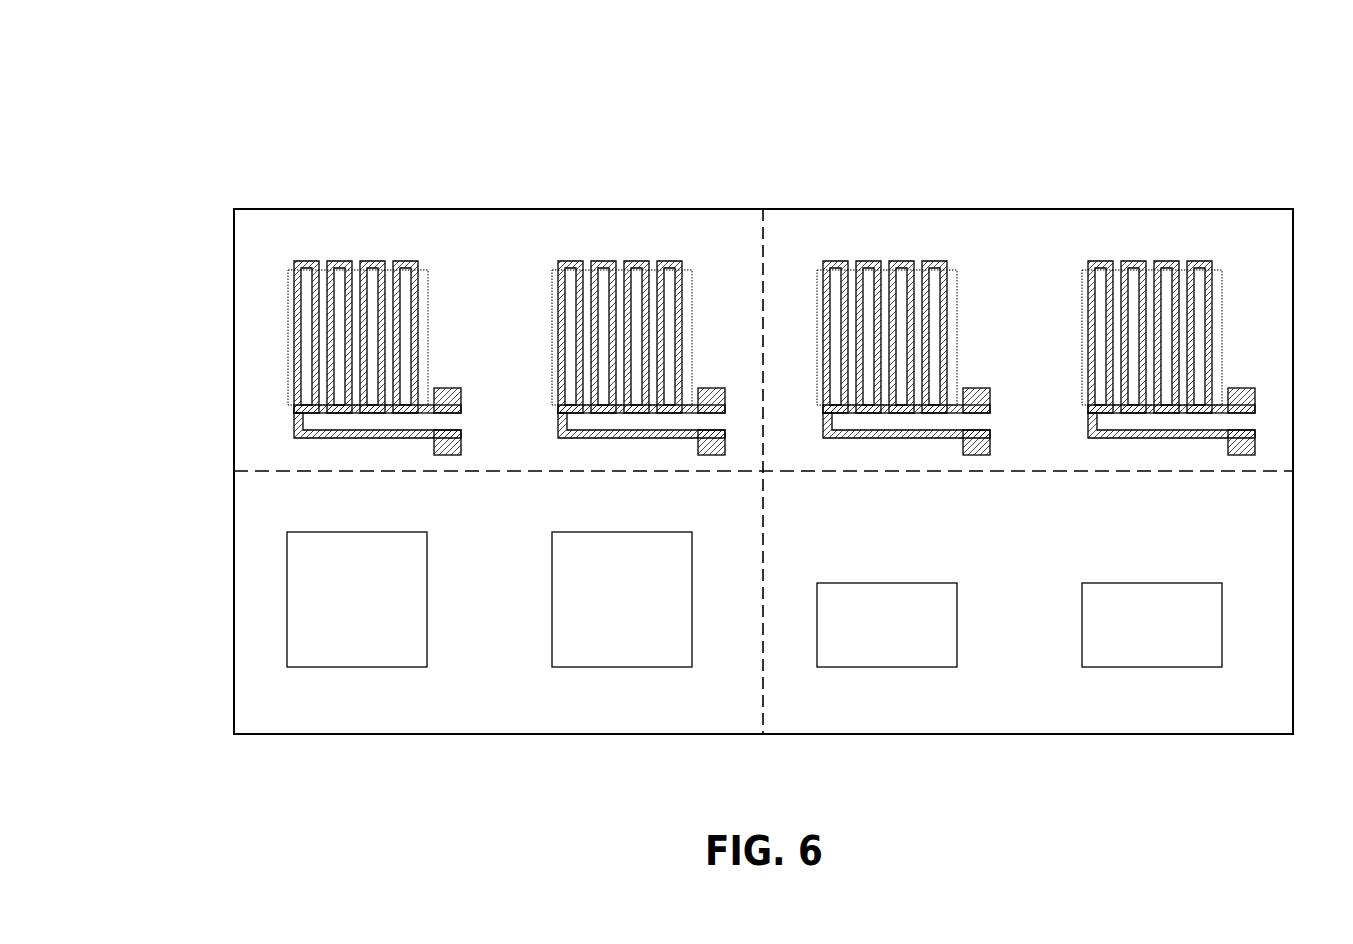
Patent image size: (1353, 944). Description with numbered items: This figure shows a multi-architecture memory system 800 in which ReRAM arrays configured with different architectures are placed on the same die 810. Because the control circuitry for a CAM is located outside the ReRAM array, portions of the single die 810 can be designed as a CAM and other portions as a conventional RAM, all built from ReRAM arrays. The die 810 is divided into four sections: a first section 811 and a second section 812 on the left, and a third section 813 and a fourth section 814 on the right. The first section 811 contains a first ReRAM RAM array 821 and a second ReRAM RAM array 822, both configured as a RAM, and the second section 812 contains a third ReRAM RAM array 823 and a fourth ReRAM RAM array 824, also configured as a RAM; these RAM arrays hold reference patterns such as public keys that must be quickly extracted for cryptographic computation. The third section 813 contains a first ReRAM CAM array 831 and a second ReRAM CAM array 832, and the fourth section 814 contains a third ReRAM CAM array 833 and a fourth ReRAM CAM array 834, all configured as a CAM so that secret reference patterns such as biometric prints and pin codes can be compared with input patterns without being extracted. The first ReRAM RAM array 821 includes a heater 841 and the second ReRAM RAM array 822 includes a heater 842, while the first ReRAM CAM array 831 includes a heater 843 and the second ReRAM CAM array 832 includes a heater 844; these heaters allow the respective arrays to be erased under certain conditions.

The multi-architecture memory system 800 is at (374, 103).
The die 810 is at (250, 207).
The first section 811 is at (260, 427).
The second section 812 is at (260, 688).
The third section 813 is at (1249, 231).
The fourth section 814 is at (1252, 532).
The first ReRAM RAM array 821 is at (428, 328).
The second ReRAM RAM array 822 is at (692, 328).
The third ReRAM RAM array 823 is at (358, 667).
The fourth ReRAM RAM array 824 is at (623, 667).
The first ReRAM CAM array 831 is at (957, 328).
The second ReRAM CAM array 832 is at (1222, 328).
The third ReRAM CAM array 833 is at (888, 667).
The fourth ReRAM CAM array 834 is at (1153, 667).
The heater 841 is at (373, 260).
The heater 842 is at (637, 260).
The heater 843 is at (903, 260).
The heater 844 is at (1168, 260).